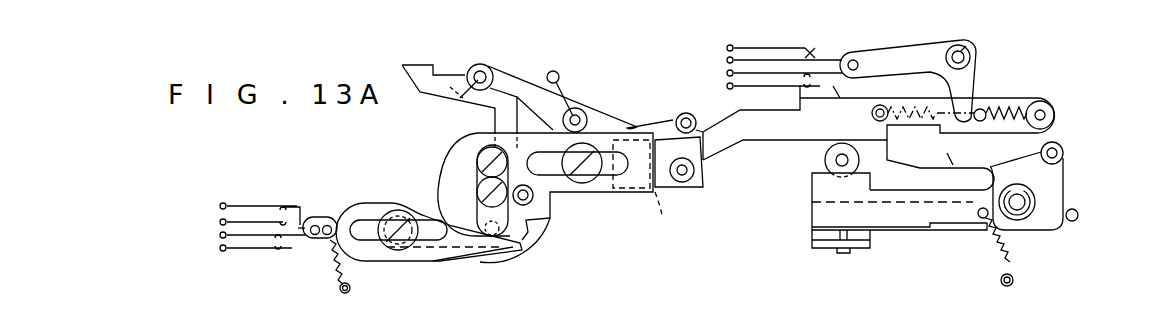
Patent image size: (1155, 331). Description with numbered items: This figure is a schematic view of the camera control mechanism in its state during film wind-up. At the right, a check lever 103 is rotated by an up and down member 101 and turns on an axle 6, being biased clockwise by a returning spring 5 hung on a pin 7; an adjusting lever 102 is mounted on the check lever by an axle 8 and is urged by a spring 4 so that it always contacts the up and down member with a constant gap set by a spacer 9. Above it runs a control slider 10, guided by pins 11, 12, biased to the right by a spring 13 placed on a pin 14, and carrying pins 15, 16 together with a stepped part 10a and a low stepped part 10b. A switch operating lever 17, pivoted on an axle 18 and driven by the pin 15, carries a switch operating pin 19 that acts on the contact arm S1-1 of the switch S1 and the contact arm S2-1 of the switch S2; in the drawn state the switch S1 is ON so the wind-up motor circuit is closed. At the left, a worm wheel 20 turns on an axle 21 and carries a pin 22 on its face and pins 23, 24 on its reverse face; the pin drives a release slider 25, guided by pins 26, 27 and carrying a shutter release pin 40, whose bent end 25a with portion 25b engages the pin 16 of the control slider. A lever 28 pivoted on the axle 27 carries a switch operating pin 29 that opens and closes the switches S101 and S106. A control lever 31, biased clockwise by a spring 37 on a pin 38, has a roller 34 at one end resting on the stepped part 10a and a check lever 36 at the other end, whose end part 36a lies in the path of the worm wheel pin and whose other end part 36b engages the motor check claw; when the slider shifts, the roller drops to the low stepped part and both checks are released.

The switch S106 is at (268, 203).
The switch S101 is at (273, 238).
The switch operating pin 29 is at (315, 240).
The release slider 25 is at (367, 252).
The pin 27 is at (393, 212).
The lever 28 is at (437, 252).
The pin 24 is at (483, 250).
The axle 21 is at (477, 197).
The pin 22 is at (477, 165).
The pin 23 is at (477, 143).
The worm wheel 20 is at (520, 253).
The hook portion 25b is at (524, 243).
The shutter release pin 40 is at (530, 200).
The pin 26 is at (586, 183).
The pin 16 is at (628, 192).
The arm portion 25a is at (657, 197).
The check lever 36 is at (450, 75).
The end part of check lever 36b is at (413, 65).
The end part of check lever 36a is at (505, 130).
The control lever 31 is at (608, 116).
The pin 38 is at (550, 71).
The spring 37 is at (573, 108).
The roller 34 is at (676, 116).
The pin 11 is at (685, 188).
The low stepped part 10b is at (676, 182).
The control slider 10 is at (754, 130).
The stepped part 10a is at (733, 158).
The switch S1 is at (803, 48).
The contact arm S1-1 is at (833, 63).
The switch S2 is at (806, 98).
The contact arm S2-1 is at (838, 86).
The switch operating lever 17 is at (922, 45).
The switch operating pin 19 is at (860, 62).
The axle 18 is at (966, 48).
The pin 15 is at (984, 108).
The spring 13 is at (1028, 108).
The pin 12 is at (1050, 105).
The pin 14 is at (878, 135).
The adjusting lever 102 is at (812, 187).
The check lever 103 is at (940, 229).
The spacer 9 is at (840, 234).
The up and down member 101 is at (826, 153).
The returning spring 5 is at (1066, 205).
The axle 6 is at (1062, 152).
The axle 8 is at (1019, 210).
The pin 7 is at (1076, 220).
The spring 4 is at (990, 243).